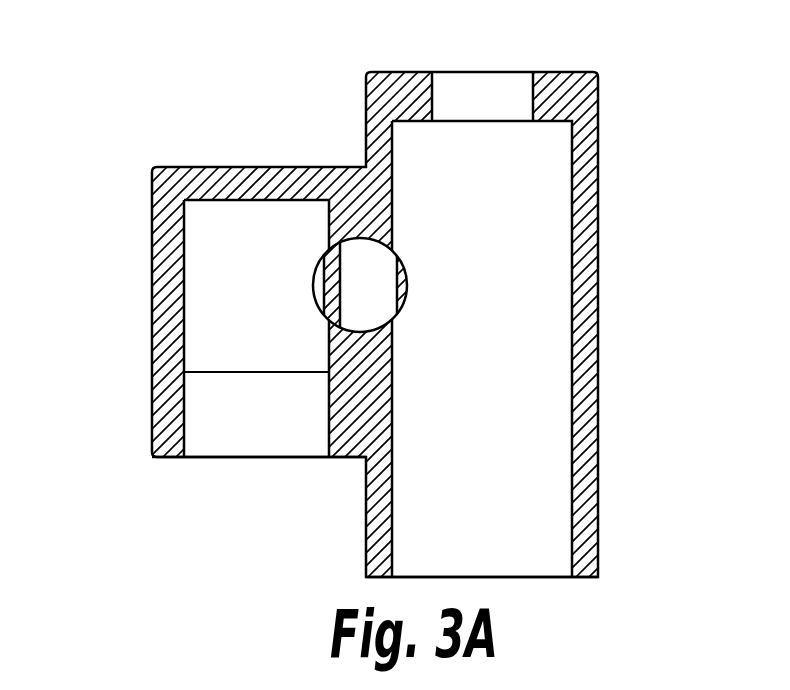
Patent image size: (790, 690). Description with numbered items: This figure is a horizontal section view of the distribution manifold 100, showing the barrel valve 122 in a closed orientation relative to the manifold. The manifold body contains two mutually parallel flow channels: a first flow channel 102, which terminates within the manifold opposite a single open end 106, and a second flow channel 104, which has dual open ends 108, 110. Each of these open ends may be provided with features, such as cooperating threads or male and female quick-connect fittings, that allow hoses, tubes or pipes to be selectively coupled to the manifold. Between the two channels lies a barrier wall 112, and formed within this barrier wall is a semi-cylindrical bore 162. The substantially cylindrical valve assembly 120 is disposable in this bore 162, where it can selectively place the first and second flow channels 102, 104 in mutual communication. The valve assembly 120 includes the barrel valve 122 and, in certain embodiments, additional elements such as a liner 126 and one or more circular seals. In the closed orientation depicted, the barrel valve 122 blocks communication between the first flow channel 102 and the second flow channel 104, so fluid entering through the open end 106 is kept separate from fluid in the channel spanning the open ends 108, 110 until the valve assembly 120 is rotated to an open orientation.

The distribution manifold 100 is at (198, 120).
The first flow channel 102 is at (150, 245).
The second flow channel 104 is at (598, 190).
The open end 106 is at (213, 458).
The open end 108 is at (476, 92).
The open end 110 is at (538, 577).
The barrier wall 112 is at (363, 402).
The valve assembly 120 is at (345, 240).
The barrel valve 122 is at (313, 297).
The liner 126 is at (313, 272).
The semi-cylindrical bore 162 is at (365, 333).